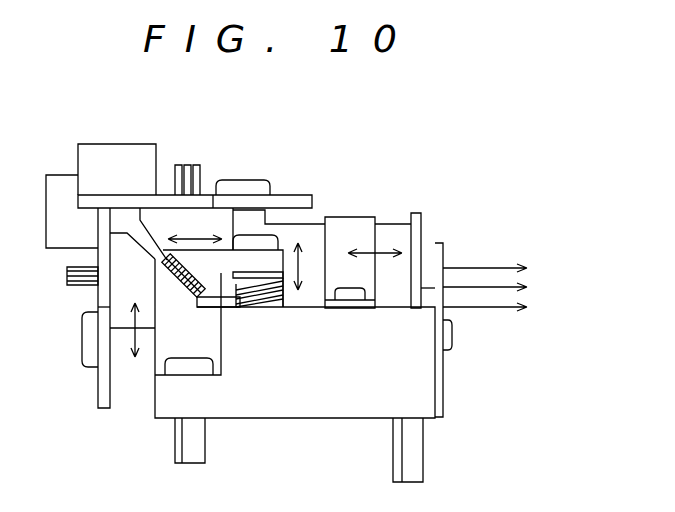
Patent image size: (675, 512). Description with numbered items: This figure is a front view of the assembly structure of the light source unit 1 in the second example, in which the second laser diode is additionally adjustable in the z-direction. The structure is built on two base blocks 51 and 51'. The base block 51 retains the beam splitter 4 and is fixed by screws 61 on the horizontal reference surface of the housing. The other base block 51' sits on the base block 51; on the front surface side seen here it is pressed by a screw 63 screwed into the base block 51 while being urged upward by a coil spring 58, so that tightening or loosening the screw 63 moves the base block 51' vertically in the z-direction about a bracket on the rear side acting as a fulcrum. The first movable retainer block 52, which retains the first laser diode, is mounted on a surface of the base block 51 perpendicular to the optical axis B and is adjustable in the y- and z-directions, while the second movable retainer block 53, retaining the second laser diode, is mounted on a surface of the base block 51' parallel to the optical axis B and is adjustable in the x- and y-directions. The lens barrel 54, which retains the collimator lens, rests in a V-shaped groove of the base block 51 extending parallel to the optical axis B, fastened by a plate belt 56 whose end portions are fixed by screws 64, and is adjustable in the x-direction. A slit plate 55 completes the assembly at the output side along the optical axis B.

The light source unit 1 is at (380, 127).
The beam splitter 4 is at (182, 283).
The base block 51 is at (295, 370).
The base block 51' is at (232, 326).
The first movable retainer block 52 is at (125, 288).
The second movable retainer block 53 is at (199, 221).
The lens barrel 54 is at (388, 223).
The slit plate 55 is at (445, 258).
The plate belt 56 is at (350, 216).
The coil spring 58 is at (265, 268).
The screws 61 is at (188, 368).
The screw 63 is at (268, 240).
The screws 64 is at (363, 290).
The optical axis B is at (497, 285).